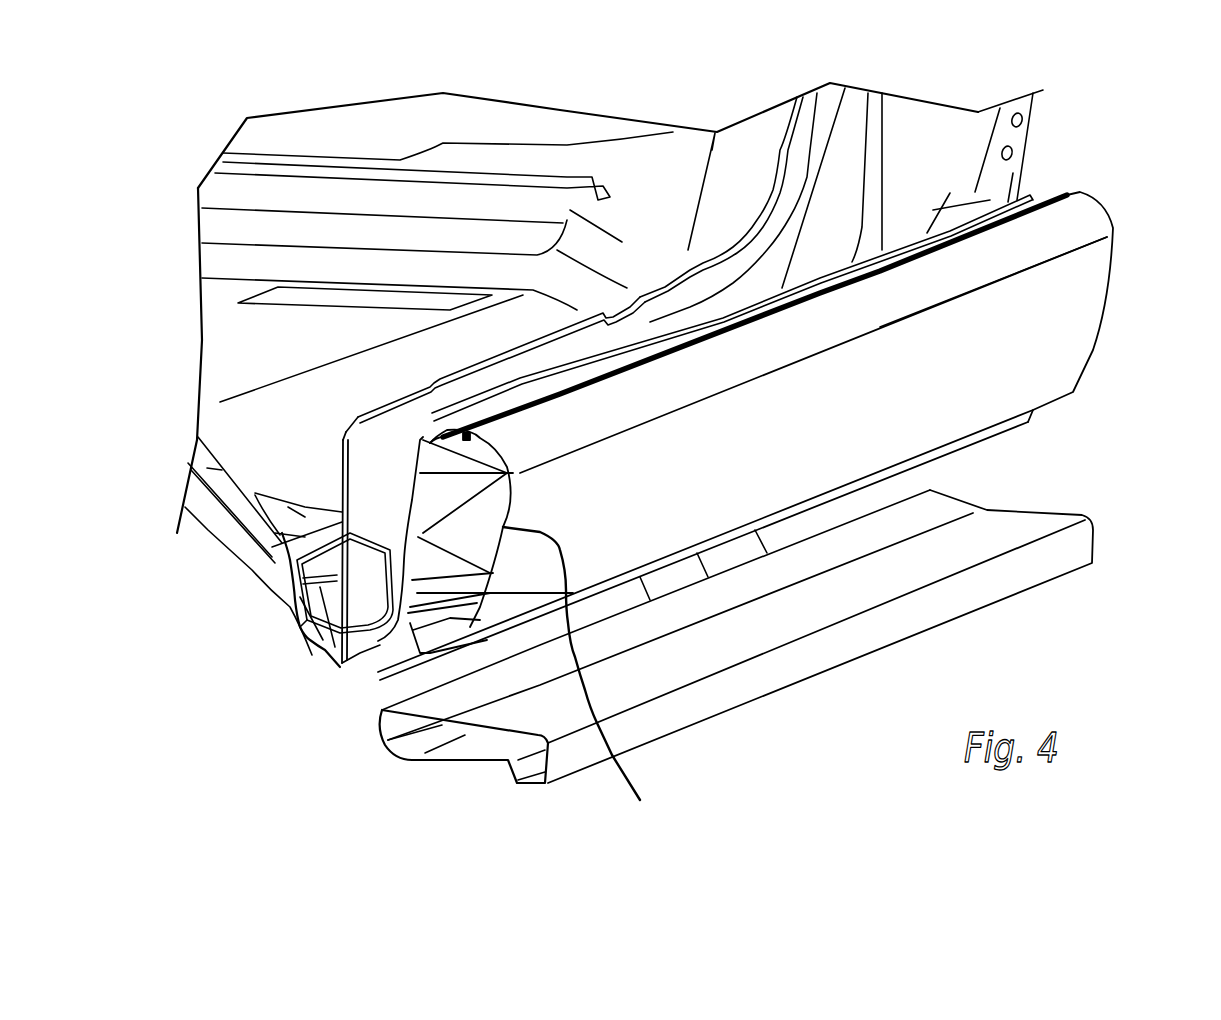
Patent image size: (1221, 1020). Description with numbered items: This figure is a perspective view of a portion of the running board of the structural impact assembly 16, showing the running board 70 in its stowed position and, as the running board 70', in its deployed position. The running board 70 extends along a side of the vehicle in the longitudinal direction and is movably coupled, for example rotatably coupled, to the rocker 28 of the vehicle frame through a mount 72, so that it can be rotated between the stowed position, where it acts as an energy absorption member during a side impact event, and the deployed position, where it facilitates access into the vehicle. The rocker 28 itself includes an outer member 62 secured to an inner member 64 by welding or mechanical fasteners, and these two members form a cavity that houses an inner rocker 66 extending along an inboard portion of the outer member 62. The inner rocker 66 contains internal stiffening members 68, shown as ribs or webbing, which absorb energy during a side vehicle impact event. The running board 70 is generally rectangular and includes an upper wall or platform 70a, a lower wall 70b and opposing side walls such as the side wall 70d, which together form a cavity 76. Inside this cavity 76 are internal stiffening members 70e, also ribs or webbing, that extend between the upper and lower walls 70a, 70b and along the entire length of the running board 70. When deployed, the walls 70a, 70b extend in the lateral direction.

The structural impact assembly 16 is at (245, 660).
The rocker 28 is at (837, 180).
The outer member 62 is at (972, 147).
The inner member 64 is at (293, 545).
The inner rocker 66 is at (312, 625).
The internal stiffening members 68 is at (350, 633).
The running board 70 is at (791, 436).
The running board in deployed position 70' is at (791, 636).
The upper wall 70a is at (415, 492).
The lower wall 70b is at (1050, 277).
The side wall 70d is at (1027, 197).
The internal stiffening members 70e is at (423, 587).
The mount 72 is at (714, 560).
The cavity 76 is at (448, 618).